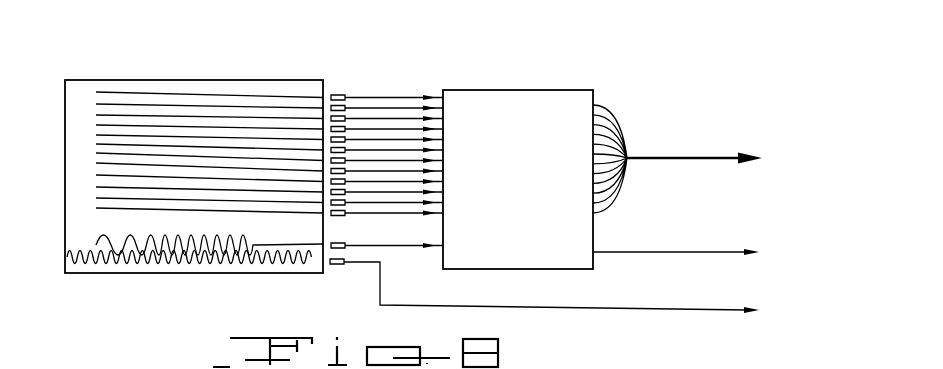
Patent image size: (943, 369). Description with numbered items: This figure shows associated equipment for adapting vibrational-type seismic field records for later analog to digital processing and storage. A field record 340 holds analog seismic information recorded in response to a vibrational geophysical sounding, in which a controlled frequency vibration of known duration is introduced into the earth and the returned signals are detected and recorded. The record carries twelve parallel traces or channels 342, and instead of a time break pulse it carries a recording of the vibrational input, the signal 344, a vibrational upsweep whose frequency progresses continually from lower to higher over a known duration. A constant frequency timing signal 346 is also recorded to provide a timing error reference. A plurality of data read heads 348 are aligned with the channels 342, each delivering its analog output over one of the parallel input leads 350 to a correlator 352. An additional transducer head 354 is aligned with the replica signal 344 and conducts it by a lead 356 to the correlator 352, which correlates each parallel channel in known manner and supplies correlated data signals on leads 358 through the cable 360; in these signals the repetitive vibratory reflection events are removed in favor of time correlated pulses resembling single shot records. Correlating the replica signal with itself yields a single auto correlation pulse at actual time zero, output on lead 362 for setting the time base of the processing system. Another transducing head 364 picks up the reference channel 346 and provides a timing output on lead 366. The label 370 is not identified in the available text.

The field record 340 is at (243, 89).
The data channels 342 is at (182, 114).
The vibrational upsweep signal 344 is at (171, 238).
The constant frequency timing signal 346 is at (166, 260).
The data read heads 348 is at (344, 128).
The parallel input leads 350 is at (378, 118).
The correlator 352 is at (546, 93).
The transducer head 354 is at (345, 248).
The lead 356 is at (401, 248).
The correlated signal output leads 358 is at (612, 122).
The cable 360 is at (668, 162).
The time zero output lead 362 is at (638, 253).
The transducing head 364 is at (343, 265).
The timing signal output lead 366 is at (645, 313).
The clock 370 is at (643, 367).